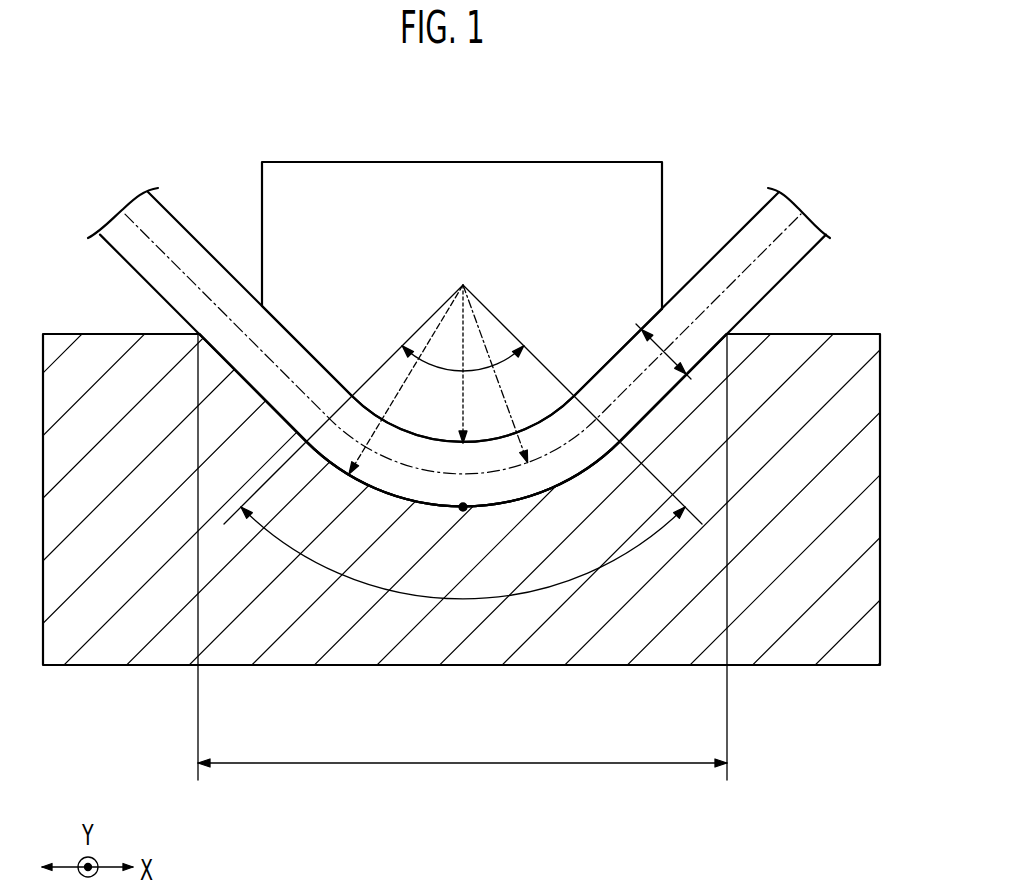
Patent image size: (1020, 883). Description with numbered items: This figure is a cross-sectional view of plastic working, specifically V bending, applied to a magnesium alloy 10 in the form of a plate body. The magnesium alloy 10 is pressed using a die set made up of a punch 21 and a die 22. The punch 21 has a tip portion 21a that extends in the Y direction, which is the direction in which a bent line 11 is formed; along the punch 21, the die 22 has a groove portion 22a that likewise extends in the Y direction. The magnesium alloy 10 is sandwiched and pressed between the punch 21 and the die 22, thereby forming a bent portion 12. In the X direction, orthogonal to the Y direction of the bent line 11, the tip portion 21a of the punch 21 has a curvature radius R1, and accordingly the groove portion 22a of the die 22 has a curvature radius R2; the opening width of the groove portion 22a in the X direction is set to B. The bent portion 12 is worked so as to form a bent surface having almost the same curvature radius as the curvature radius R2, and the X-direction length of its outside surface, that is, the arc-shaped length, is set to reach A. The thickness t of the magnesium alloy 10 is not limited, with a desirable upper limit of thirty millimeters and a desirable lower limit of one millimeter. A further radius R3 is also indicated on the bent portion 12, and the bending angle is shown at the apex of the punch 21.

The magnesium alloy 10 is at (459, 424).
The bent line 11 is at (463, 511).
The bent portion 12 is at (543, 587).
The punch 21 is at (486, 257).
The tip portion 21a is at (538, 385).
The die 22 is at (510, 510).
The groove portion 22a is at (577, 476).
The curvature radius of the punch tip portion R1 is at (462, 320).
The curvature radius of the groove portion R2 is at (400, 390).
The sheet neutral-axis bend radius R3 is at (481, 335).
The thickness t is at (664, 349).
The arc-shaped length of the outside surface A is at (400, 598).
The opening width of the groove portion B is at (462, 781).